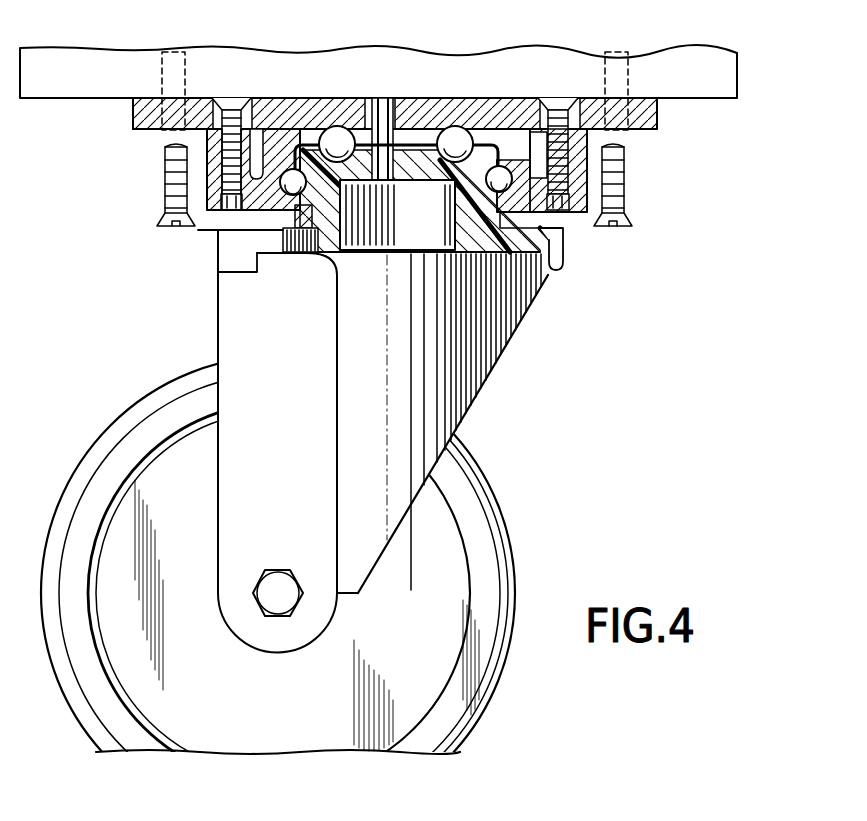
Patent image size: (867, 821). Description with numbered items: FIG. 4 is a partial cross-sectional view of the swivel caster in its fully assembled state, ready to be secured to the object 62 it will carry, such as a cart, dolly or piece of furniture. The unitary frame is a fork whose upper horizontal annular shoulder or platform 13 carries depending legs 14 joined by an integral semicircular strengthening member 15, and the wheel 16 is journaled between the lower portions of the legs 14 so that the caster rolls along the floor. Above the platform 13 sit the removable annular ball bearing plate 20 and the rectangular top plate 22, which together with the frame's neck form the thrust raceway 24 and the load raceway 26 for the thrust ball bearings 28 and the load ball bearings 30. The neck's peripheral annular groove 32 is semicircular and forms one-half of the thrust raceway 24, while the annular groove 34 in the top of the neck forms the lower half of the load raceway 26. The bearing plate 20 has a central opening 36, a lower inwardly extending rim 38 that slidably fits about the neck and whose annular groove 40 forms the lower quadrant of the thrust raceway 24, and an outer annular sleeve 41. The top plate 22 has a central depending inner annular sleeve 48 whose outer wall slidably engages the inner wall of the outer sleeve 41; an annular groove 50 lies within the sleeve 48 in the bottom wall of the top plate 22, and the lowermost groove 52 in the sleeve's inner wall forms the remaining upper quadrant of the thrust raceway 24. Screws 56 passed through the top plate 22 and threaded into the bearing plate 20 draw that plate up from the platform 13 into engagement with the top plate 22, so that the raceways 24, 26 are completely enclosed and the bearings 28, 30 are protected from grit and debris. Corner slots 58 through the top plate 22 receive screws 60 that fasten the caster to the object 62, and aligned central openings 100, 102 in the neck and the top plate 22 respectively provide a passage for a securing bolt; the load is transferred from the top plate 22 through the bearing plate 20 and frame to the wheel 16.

The upper horizontal annular shoulder or platform 13 is at (556, 228).
The legs 14 is at (218, 336).
The integral semicircular strengthening member 15 is at (462, 411).
The wheel 16 is at (500, 538).
The removable annular ball bearing plate 20 is at (586, 143).
The rectangular top plate 22 is at (660, 126).
The thrust raceway 24 is at (497, 168).
The load raceway 26 is at (503, 100).
The thrust ball bearings 28 is at (302, 202).
The load ball bearings 30 is at (328, 128).
The annular groove 32 is at (460, 247).
The annular groove in the top of the neck 34 is at (453, 128).
The central opening 36 is at (307, 249).
The lower inwardly extending annular horizontal rim 38 is at (250, 208).
The annular groove 40 is at (280, 187).
The outer annular sleeve 41 is at (205, 190).
The central depending inner annular sleeve 48 is at (272, 165).
The annular groove 50 is at (345, 135).
The lowermost annular groove 52 is at (275, 165).
The screws 56 is at (235, 118).
The corner slots 58 is at (167, 110).
The screws 60 is at (166, 180).
The object 62 is at (121, 34).
The central opening in the neck 100 is at (407, 165).
The central opening in the top plate 102 is at (394, 118).